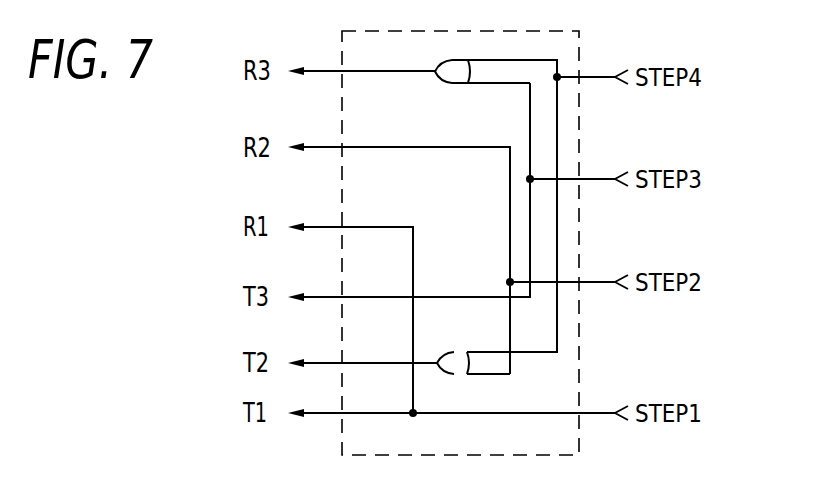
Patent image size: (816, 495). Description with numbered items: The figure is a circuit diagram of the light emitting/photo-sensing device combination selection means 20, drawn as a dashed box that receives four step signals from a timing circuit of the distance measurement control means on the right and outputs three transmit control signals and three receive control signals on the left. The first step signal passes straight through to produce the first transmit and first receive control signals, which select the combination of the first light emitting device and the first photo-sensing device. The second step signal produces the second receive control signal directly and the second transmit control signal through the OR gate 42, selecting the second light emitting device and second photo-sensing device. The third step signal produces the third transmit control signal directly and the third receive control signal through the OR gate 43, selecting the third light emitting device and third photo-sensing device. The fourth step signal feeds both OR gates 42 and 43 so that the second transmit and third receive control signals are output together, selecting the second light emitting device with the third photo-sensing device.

The light emitting/photo-sensing device combination selection means 20 is at (579, 370).
The OR gate 42 is at (450, 351).
The OR gate 43 is at (457, 84).